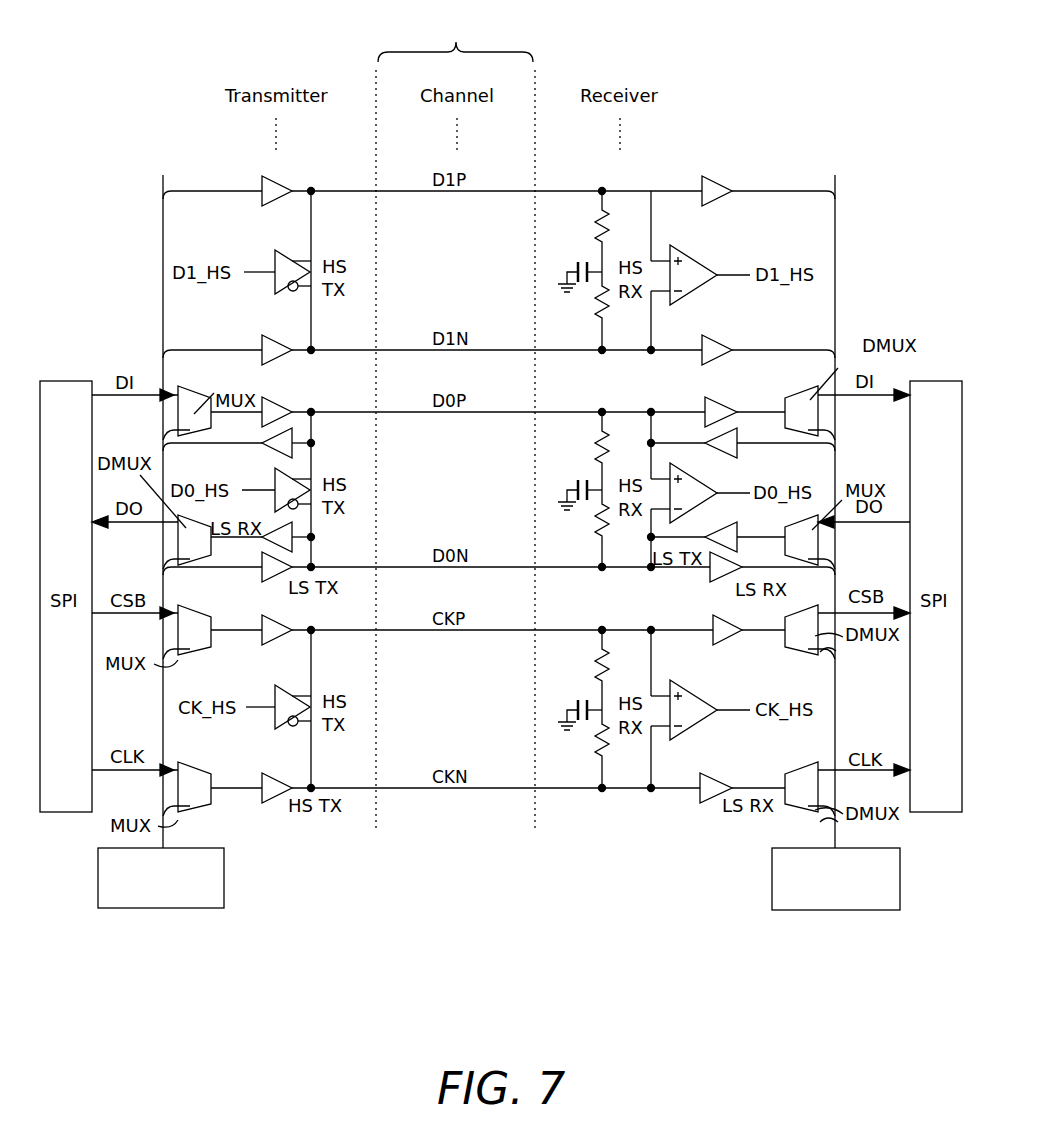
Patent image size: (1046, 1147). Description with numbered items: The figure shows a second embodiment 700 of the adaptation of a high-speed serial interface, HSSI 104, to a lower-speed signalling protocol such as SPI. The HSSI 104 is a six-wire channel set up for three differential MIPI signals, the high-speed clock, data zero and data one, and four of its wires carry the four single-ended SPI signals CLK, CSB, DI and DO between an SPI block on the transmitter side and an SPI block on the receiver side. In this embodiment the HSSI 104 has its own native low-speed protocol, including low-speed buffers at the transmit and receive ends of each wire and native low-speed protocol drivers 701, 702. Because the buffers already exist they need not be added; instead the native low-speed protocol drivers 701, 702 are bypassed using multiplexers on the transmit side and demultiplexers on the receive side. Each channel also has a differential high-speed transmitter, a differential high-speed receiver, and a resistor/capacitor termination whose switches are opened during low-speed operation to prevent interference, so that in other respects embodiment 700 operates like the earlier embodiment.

The high-speed serial interface (HSSI) channel 104 is at (455, 40).
The embodiment of HSSI adaptation for low-speed operation 700 is at (792, 110).
The native low-speed protocol driver 701 is at (180, 908).
The native low-speed protocol driver 702 is at (772, 906).